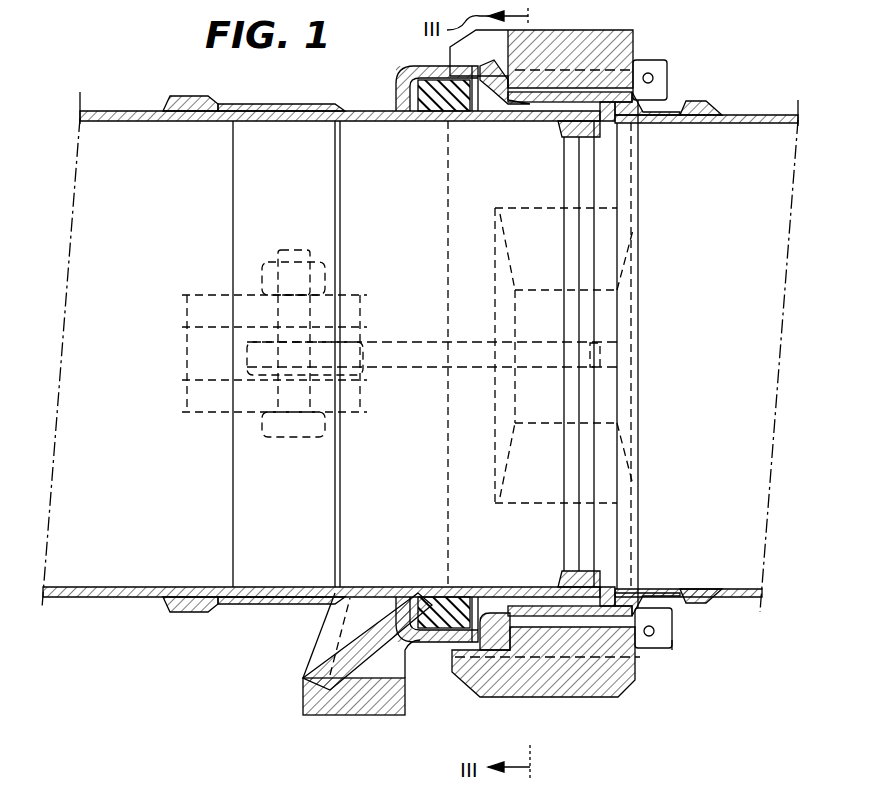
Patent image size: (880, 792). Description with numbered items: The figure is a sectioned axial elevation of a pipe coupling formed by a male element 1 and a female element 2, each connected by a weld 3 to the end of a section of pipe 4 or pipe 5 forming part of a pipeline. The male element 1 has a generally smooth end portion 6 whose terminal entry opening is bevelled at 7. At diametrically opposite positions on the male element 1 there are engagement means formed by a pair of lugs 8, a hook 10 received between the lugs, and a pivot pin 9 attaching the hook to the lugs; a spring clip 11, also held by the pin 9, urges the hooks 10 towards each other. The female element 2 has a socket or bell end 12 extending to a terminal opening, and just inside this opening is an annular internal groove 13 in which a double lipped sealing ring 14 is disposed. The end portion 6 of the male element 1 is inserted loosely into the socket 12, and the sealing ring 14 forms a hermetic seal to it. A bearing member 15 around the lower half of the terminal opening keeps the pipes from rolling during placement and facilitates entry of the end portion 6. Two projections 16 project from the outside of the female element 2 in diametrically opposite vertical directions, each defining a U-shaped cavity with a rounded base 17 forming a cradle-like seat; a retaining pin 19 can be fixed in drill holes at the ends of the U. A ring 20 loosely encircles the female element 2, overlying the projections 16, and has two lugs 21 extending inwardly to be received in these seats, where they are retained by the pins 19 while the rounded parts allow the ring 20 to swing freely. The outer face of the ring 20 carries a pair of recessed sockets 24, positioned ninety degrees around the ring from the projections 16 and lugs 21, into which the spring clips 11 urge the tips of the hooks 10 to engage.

The male element 1 is at (298, 96).
The female element 2 is at (660, 104).
The weld 3 is at (164, 110).
The pipe 4 is at (116, 112).
The pipe 5 is at (767, 115).
The end portion 6 is at (514, 110).
The bevel 7 is at (628, 133).
The lugs 8 is at (207, 325).
The pivot pin 9 is at (292, 252).
The hook 10 is at (403, 365).
The spring clip 11 is at (368, 338).
The socket 12 is at (583, 607).
The annular internal groove 13 is at (462, 642).
The double lipped sealing ring 14 is at (426, 632).
The bracket 15 is at (364, 704).
The projections 16 is at (653, 650).
The rounded base 17 is at (510, 76).
The retaining pin 19 is at (652, 74).
The ring 20 is at (558, 684).
The lugs 21 is at (553, 120).
The recessed sockets 24 is at (515, 405).